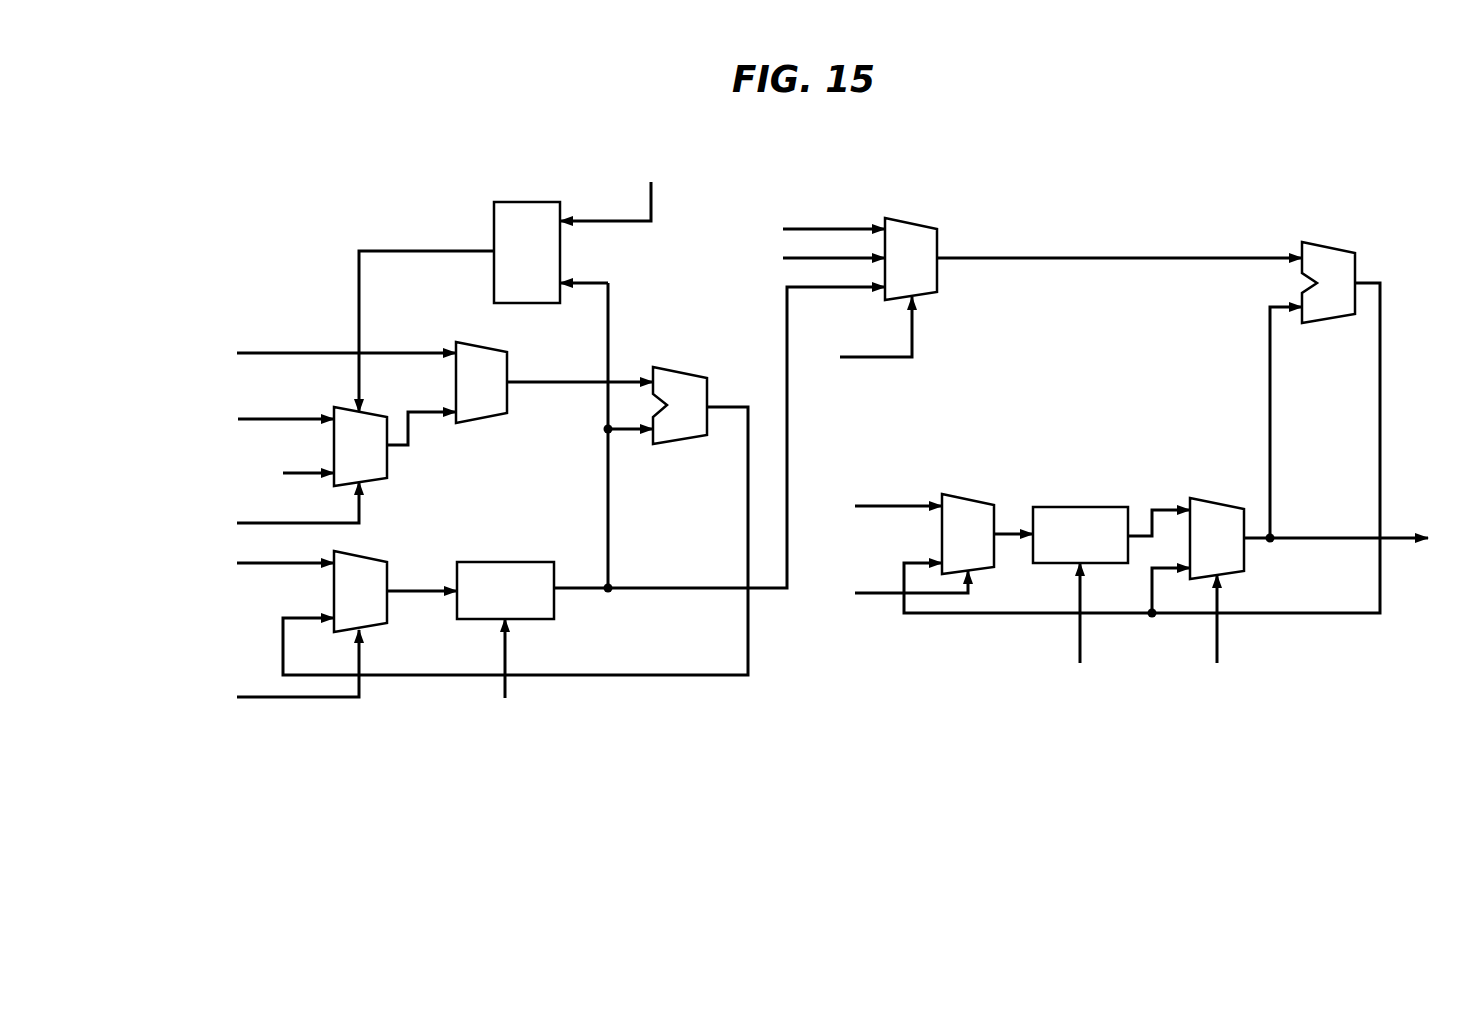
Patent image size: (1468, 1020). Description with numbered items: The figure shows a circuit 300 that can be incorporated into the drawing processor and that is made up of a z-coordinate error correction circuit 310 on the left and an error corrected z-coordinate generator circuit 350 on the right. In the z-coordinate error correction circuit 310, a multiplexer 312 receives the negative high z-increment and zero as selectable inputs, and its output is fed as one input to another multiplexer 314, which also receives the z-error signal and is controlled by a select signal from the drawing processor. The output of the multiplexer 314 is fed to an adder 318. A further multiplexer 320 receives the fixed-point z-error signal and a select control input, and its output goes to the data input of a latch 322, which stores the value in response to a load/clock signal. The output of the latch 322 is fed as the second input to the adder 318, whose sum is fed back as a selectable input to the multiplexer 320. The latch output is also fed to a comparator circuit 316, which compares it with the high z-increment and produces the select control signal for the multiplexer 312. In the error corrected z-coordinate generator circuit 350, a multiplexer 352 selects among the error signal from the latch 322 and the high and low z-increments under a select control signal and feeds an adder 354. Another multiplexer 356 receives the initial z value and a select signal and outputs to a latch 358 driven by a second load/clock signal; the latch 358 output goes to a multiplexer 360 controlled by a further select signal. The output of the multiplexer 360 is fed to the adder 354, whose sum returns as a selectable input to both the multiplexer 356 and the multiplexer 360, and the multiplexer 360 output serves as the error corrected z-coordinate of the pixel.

The circuit 300 is at (283, 223).
The z-coordinate error correction circuit 310 is at (408, 778).
The multiplexer 312 is at (388, 462).
The multiplexer 314 is at (476, 343).
The comparator circuit 316 is at (530, 202).
The adder 318 is at (672, 367).
The multiplexer 320 is at (362, 552).
The latch 322 is at (500, 562).
The error corrected z-coordinate generator circuit 350 is at (987, 759).
The multiplexer 352 is at (903, 218).
The adder 354 is at (1322, 242).
The multiplexer 356 is at (963, 494).
The latch 358 is at (1080, 507).
The multiplexer 360 is at (1208, 498).